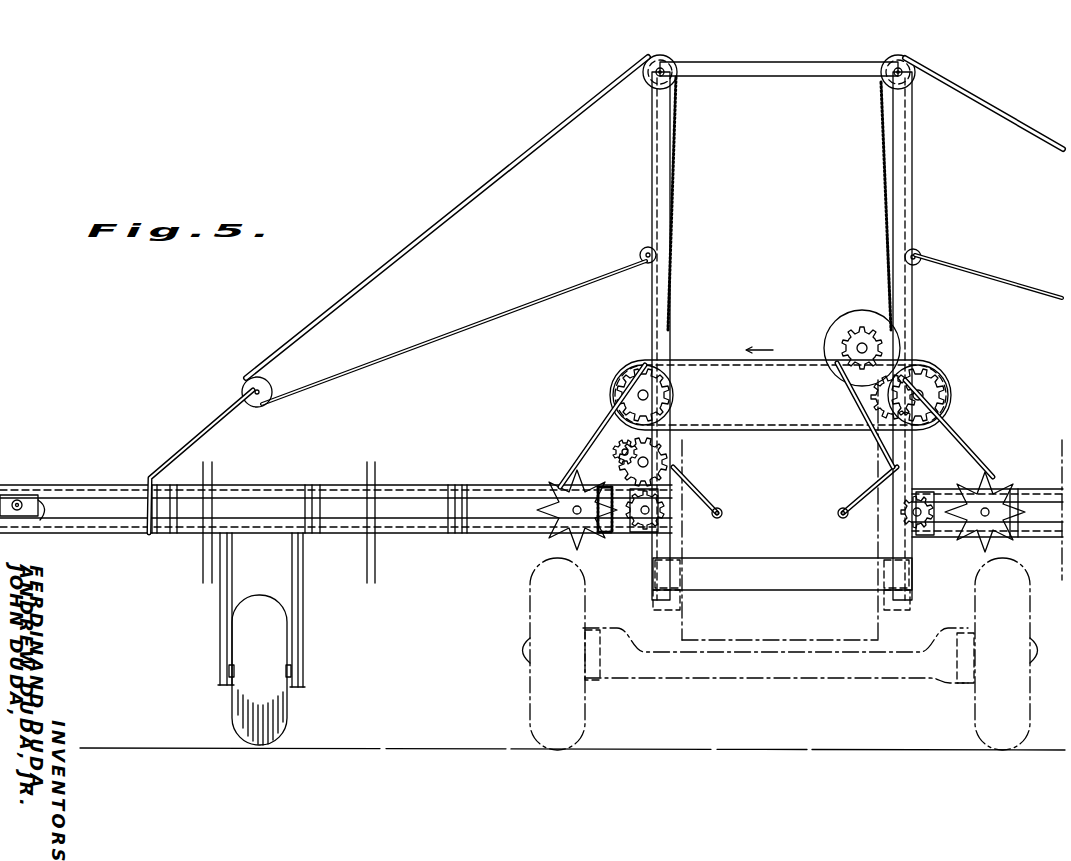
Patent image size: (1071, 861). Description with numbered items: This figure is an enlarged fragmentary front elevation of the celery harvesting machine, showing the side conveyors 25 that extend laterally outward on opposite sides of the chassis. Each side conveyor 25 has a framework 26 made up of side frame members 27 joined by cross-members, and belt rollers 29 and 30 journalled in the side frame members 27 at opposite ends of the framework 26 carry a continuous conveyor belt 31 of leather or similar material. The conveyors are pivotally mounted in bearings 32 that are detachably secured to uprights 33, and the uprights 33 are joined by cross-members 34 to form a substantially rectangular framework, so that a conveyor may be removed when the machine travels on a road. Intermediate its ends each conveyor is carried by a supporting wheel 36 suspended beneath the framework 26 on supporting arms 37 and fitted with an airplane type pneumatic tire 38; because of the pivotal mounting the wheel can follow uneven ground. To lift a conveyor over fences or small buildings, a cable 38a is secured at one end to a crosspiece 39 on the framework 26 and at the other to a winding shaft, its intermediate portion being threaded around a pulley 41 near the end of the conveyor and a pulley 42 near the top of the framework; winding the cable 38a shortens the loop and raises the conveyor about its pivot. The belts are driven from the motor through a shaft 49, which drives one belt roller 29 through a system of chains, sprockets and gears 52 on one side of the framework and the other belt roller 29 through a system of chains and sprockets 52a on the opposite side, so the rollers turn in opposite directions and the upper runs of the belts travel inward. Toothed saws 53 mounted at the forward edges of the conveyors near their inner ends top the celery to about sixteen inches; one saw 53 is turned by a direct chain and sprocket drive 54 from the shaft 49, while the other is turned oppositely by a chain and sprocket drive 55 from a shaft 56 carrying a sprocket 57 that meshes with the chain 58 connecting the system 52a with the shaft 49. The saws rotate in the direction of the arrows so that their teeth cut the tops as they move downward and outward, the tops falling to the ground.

The side conveyor 25 is at (95, 470).
The framework 26 is at (430, 508).
The side frame member 27 is at (97, 525).
The belt roller 29 is at (620, 528).
The belt roller 30 is at (42, 520).
The conveyor belt 31 is at (433, 484).
The bearing 32 is at (640, 527).
The upright 33 is at (652, 233).
The cross-member 34 is at (800, 64).
The supporting wheel 36 is at (290, 703).
The supporting arm 37 is at (298, 575).
The pneumatic tire 38 is at (243, 655).
The cable 38a is at (476, 194).
The crosspiece 39 is at (645, 262).
The pulley 41 is at (243, 390).
The pulley 42 is at (648, 80).
The shaft 49 is at (640, 395).
The system of chains, sprockets and gears 52 is at (625, 442).
The system of chains and sprockets 52a is at (945, 438).
The saw 53 is at (552, 527).
The chain and sprocket drive 54 is at (618, 450).
The chain and sprocket drive 55 is at (942, 418).
The shaft 56 is at (850, 348).
The sprocket 57 is at (852, 325).
The chain 58 is at (725, 350).